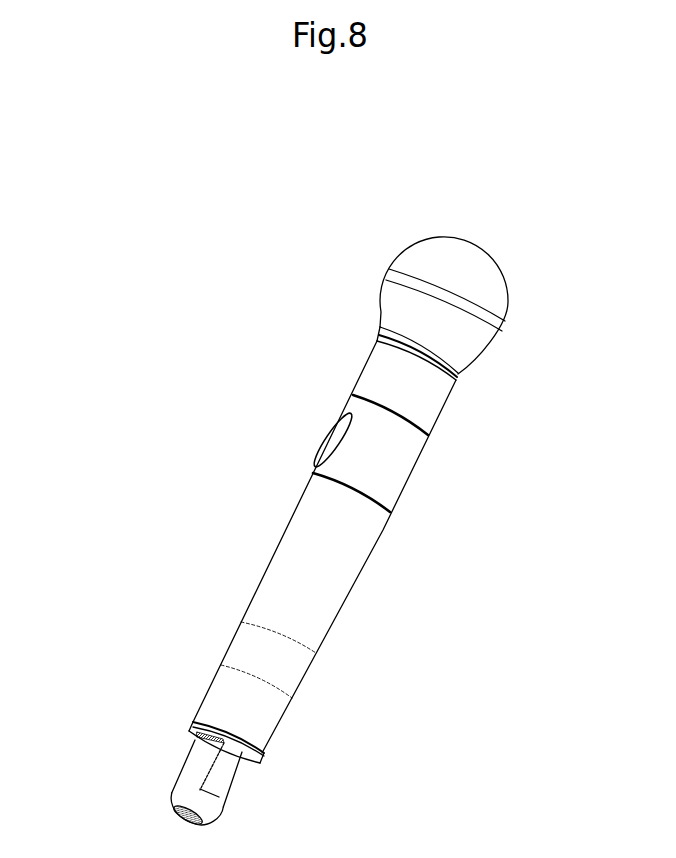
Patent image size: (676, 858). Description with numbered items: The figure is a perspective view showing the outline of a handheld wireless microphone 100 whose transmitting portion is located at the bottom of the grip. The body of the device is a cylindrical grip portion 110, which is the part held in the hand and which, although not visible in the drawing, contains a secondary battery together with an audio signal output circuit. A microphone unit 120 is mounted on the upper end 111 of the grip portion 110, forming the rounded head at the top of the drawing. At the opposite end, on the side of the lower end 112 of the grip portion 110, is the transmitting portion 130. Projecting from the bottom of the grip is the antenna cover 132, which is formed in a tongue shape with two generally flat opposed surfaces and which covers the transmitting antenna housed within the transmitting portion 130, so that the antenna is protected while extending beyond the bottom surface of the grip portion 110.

The wireless microphone 100 is at (272, 436).
The grip portion 110 is at (389, 571).
The upper end of the grip portion 111 is at (456, 376).
The lower end of the grip portion 112 is at (196, 716).
The microphone unit 120 is at (364, 257).
The transmitting portion 130 is at (131, 772).
The antenna cover 132 is at (225, 788).